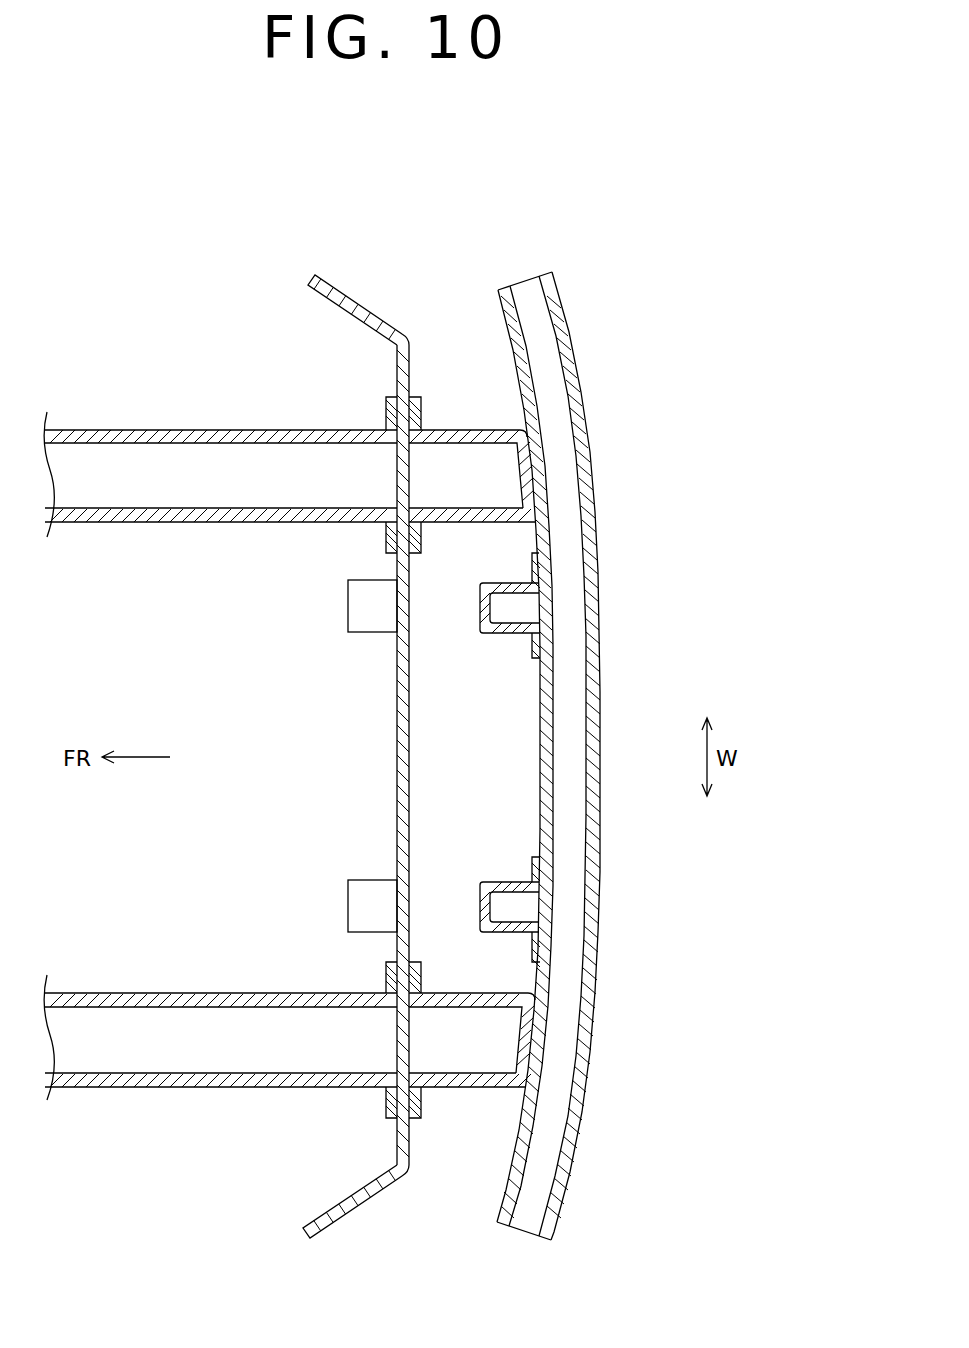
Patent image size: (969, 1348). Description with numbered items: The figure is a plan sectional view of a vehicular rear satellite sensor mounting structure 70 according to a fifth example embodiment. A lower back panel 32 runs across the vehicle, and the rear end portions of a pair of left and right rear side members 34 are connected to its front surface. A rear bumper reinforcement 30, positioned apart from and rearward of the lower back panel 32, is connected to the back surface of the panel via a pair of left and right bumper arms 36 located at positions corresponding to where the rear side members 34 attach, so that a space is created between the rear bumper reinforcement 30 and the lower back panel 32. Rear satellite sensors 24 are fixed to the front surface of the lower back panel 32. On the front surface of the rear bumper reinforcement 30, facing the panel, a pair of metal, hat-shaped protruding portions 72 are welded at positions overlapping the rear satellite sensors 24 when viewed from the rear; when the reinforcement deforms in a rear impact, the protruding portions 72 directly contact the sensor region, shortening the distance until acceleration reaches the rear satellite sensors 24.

The rear satellite sensor 24 is at (350, 605).
The rear bumper reinforcement 30 is at (599, 744).
The lower back panel 32 is at (410, 719).
The rear side member 34 is at (212, 523).
The bumper arm 36 is at (464, 523).
The vehicular rear satellite sensor mounting structure 70 is at (503, 244).
The protruding portion 72 is at (495, 635).